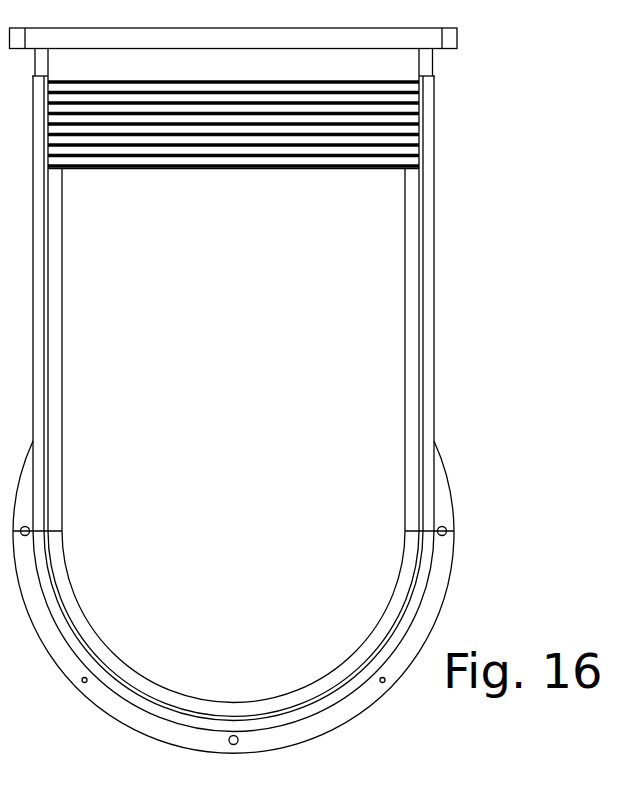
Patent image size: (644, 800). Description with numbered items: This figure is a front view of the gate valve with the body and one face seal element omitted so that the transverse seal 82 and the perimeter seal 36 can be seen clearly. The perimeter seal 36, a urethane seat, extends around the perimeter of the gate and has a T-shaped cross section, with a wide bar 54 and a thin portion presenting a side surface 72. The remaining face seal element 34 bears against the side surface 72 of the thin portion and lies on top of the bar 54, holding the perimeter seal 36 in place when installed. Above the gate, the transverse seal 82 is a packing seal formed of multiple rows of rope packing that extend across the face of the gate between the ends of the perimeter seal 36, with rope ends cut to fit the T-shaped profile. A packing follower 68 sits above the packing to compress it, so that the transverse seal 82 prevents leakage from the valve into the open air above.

The packing follower 68 is at (447, 33).
The transverse seal 82 is at (417, 120).
The perimeter seal 36 is at (435, 248).
The bar of the T 54 is at (426, 287).
The side surface of the perimeter seal 72 is at (409, 223).
The face seal element 34 is at (448, 558).